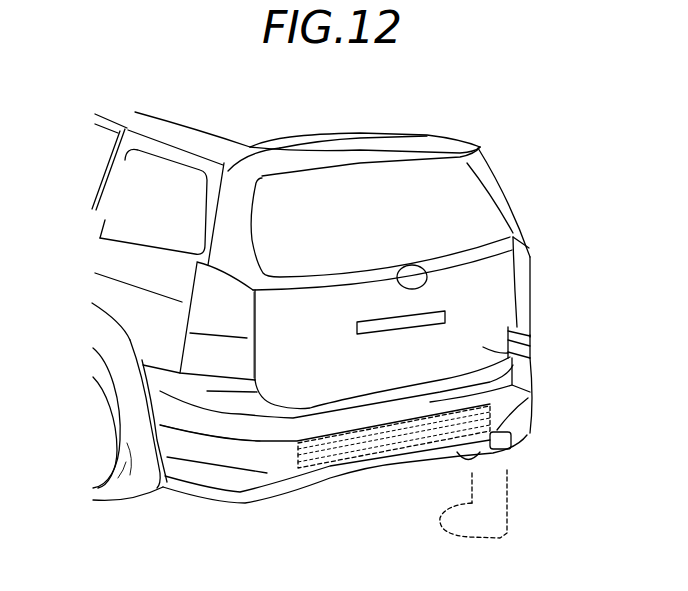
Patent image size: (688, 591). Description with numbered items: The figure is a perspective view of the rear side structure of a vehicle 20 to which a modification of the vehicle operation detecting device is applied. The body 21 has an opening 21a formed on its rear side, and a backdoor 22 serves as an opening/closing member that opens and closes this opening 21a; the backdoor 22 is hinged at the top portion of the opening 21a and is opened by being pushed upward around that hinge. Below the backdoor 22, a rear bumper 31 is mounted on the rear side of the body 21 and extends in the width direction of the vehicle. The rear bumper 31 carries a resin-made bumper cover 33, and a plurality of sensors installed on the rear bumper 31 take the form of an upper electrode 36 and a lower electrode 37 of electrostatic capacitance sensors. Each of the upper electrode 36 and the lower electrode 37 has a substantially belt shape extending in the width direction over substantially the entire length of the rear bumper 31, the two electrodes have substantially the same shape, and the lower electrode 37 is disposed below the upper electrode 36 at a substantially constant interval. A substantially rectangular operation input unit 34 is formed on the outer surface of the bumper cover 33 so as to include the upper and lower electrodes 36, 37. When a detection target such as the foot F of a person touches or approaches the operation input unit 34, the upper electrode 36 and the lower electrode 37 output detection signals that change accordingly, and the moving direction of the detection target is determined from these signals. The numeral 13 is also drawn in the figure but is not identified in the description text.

The exhaust pipe / sensor position 13 is at (402, 387).
The vehicle 20 is at (542, 166).
The body 21 is at (372, 110).
The opening 21a is at (254, 318).
The backdoor 22 is at (531, 347).
The rear bumper 31 is at (337, 451).
The bumper cover 33 is at (240, 486).
The operation input unit 34 is at (297, 461).
The upper electrode 36 is at (321, 440).
The lower electrode 37 is at (326, 472).
The foot F is at (507, 478).